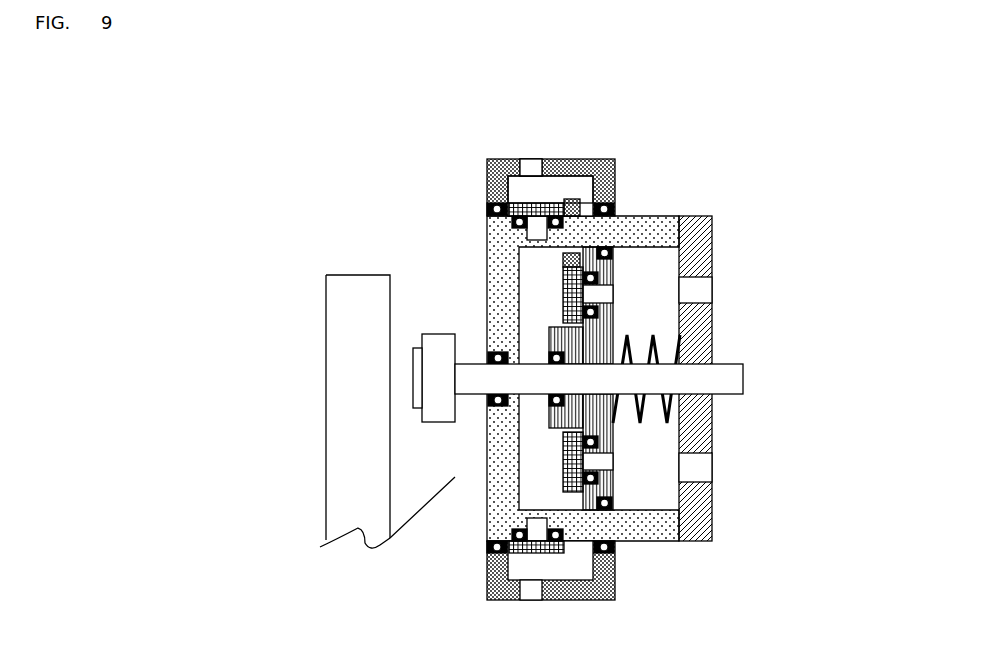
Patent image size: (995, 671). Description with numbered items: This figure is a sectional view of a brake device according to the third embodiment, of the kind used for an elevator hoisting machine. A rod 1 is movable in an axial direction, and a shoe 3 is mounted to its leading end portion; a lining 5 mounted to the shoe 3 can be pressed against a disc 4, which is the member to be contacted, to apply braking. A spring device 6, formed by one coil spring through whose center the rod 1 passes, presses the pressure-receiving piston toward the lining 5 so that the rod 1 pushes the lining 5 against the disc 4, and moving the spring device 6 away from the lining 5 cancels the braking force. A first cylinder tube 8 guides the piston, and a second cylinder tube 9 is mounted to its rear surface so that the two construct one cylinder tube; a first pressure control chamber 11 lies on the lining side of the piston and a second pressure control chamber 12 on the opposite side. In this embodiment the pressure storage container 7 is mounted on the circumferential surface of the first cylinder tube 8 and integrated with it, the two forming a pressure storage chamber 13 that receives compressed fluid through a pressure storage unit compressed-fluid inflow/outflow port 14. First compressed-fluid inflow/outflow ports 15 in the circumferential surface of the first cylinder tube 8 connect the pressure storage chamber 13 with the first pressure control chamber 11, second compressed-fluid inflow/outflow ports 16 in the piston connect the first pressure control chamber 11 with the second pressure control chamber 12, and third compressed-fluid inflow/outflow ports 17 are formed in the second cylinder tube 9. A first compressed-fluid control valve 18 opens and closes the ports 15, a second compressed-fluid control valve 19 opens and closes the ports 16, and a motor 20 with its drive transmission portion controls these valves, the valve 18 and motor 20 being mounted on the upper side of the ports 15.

The rod 1 is at (735, 378).
The shoe 3 is at (435, 385).
The disc 4 is at (350, 355).
The lining 5 is at (413, 357).
The spring device 6 is at (683, 347).
The pressure storage container 7 is at (490, 163).
The first cylinder tube 8 is at (493, 512).
The second cylinder tube 9 is at (565, 290).
The first pressure control chamber 11 is at (548, 492).
The second pressure control chamber 12 is at (600, 460).
The pressure storage chamber 13 is at (527, 192).
The pressure storage unit compressed-fluid inflow/outflow port 14 is at (532, 166).
The first compressed-fluid inflow/outflow ports 15 is at (498, 213).
The second compressed-fluid inflow/outflow ports 16 is at (642, 478).
The third compressed-fluid inflow/outflow ports 17 is at (697, 468).
The first compressed-fluid control valve 18 is at (543, 202).
The second compressed-fluid control valve 19 is at (600, 270).
The motor 20 is at (577, 253).